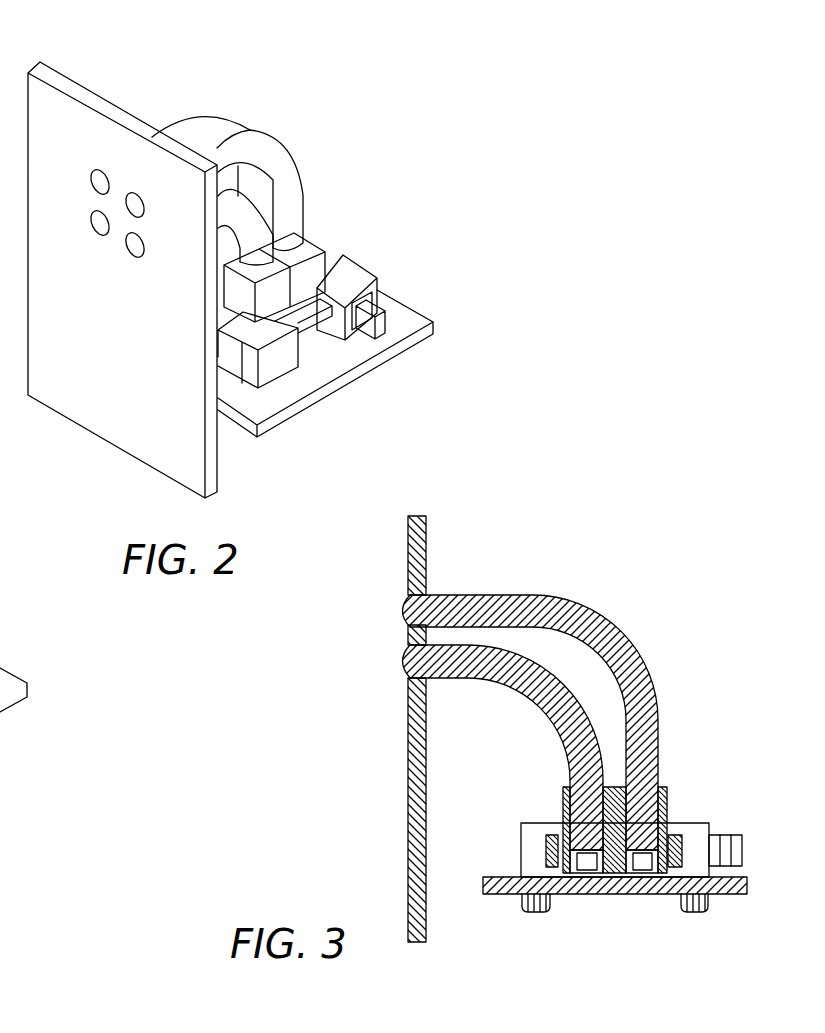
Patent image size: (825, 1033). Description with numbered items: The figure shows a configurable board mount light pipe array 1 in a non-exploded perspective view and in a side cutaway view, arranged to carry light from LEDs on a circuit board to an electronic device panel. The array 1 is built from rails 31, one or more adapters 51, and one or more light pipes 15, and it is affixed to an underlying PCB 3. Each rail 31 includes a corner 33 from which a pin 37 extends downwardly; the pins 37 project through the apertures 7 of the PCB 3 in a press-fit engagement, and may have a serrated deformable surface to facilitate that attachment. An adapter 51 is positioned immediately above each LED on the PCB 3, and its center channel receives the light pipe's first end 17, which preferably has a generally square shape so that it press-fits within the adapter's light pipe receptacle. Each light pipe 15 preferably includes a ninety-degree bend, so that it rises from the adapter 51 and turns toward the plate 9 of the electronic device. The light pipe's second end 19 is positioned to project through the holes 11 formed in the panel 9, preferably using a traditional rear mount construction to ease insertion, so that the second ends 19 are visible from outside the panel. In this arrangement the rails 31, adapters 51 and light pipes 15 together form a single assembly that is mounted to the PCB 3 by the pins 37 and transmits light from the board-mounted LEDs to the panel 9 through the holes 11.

In FIG. 3, the configurable board mount light pipe array 1 is at (648, 490).
In FIG. 2, the PCB 3 is at (403, 323).
In FIG. 3, the apertures 7 is at (548, 896).
In FIG. 2, the plate 9 is at (118, 369).
In FIG. 3, the plate 9 is at (408, 797).
In FIG. 2, the holes 11 is at (94, 163).
In FIG. 3, the holes 11 is at (407, 682).
In FIG. 2, the light pipe 15 is at (297, 192).
In FIG. 3, the light pipe 15 is at (623, 648).
In FIG. 2, the first end 17 is at (298, 243).
In FIG. 3, the first end 17 is at (645, 782).
In FIG. 2, the second end 19 is at (138, 204).
In FIG. 3, the second end 19 is at (408, 617).
In FIG. 2, the rail 31 is at (308, 328).
In FIG. 3, the rail 31 is at (735, 850).
In FIG. 2, the corner 33 is at (358, 277).
In FIG. 3, the pin 37 is at (532, 913).
In FIG. 3, the adapter 51 is at (668, 800).